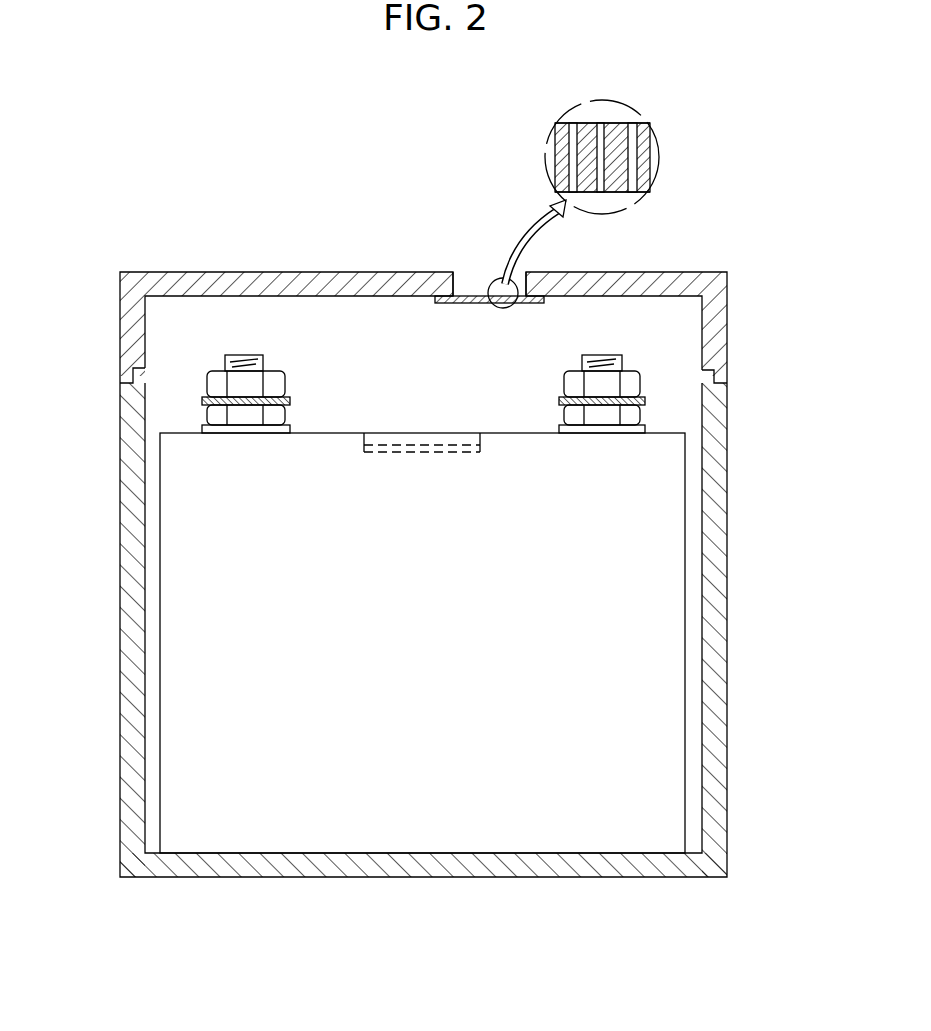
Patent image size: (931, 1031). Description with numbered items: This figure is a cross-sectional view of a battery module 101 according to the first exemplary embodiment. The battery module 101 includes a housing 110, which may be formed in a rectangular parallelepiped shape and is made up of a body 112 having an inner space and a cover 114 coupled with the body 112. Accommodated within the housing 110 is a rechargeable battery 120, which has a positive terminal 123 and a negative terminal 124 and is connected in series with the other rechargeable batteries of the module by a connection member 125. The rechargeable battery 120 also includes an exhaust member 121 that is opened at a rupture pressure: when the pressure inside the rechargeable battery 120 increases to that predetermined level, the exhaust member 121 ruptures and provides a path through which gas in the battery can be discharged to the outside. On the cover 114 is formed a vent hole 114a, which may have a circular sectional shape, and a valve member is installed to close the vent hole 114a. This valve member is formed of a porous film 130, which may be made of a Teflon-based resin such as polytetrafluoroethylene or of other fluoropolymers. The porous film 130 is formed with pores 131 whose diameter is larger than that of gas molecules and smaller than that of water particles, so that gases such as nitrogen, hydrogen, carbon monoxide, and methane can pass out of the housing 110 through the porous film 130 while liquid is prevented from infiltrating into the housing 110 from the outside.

The battery module 101 is at (400, 168).
The housing 110 is at (733, 616).
The body 112 is at (716, 452).
The cover 114 is at (672, 286).
The vent hole 114a is at (488, 286).
The rechargeable battery 120 is at (152, 690).
The exhaust member 121 is at (438, 446).
The positive terminal 123 is at (245, 355).
The negative terminal 124 is at (612, 356).
The connection member 125 is at (644, 400).
The porous film 130 is at (468, 297).
The pores 131 is at (633, 123).